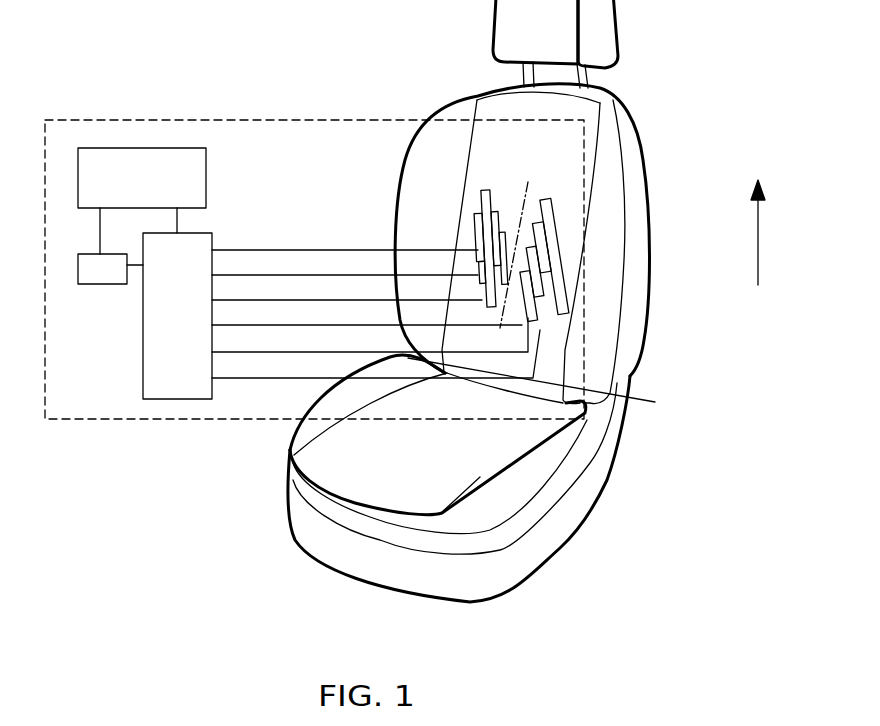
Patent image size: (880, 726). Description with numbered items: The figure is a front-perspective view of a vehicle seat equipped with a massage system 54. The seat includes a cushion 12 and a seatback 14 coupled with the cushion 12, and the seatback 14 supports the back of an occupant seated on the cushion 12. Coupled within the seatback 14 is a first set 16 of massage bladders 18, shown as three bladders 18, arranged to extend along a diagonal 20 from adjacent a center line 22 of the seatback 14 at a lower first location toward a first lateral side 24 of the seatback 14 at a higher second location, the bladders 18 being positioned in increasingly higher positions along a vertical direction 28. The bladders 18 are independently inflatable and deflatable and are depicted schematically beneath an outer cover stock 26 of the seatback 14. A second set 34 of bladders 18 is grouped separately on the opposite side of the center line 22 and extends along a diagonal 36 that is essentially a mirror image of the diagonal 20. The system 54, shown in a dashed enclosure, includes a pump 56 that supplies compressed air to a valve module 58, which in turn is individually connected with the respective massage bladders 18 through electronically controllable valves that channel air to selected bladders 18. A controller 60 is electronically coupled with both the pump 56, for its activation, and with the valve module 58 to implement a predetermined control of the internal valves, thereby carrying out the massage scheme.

The cushion 12 is at (567, 503).
The seatback 14 is at (640, 182).
The first set of massage bladders 16 is at (540, 205).
The massage bladder 18 is at (500, 250).
The diagonal 20 is at (568, 240).
The center line 22 is at (545, 387).
The first lateral side 24 is at (630, 333).
The outer cover stock 26 is at (505, 97).
The vertical direction 28 is at (758, 243).
The second set of bladders 34 is at (508, 203).
The diagonal 36 is at (463, 208).
The system 54 is at (126, 119).
The pump 56 is at (110, 269).
The valve module 58 is at (341, 316).
The controller 60 is at (142, 201).